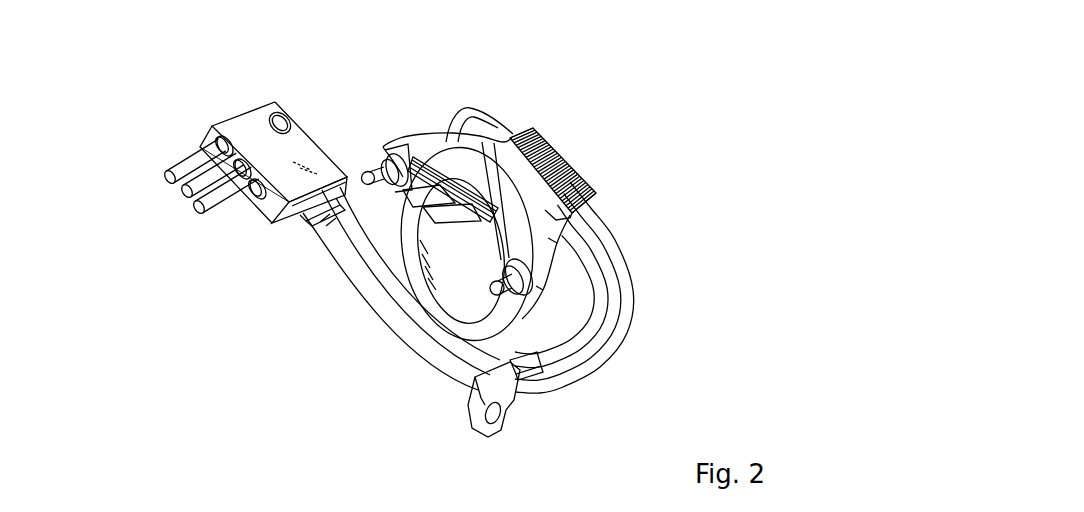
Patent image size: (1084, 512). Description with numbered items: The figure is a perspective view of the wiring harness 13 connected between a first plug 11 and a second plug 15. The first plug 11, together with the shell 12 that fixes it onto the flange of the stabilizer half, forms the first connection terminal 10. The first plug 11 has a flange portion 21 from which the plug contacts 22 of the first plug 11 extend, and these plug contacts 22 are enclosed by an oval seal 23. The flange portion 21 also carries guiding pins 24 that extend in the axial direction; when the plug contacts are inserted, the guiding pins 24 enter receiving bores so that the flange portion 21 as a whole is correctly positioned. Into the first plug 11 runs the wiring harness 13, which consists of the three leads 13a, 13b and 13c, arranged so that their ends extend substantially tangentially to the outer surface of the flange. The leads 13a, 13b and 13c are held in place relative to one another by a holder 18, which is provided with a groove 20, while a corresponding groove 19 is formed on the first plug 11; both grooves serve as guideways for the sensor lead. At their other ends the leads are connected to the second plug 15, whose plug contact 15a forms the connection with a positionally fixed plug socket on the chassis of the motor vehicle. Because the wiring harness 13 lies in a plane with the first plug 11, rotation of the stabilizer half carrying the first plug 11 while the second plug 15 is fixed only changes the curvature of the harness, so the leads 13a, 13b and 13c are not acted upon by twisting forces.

The first connection terminal 10 is at (592, 178).
The first plug 11 is at (531, 135).
The shell 12 is at (463, 292).
The wiring harness 13 is at (625, 223).
The lead 13a is at (597, 272).
The lead 13b is at (615, 297).
The lead 13c is at (627, 325).
The second plug 15 is at (298, 146).
The plug contact 15a is at (192, 208).
The holder 18 is at (506, 405).
The groove 19 is at (548, 152).
The groove 20 is at (478, 418).
The flange portion 21 is at (490, 133).
The plug contacts 22 is at (417, 210).
The seal 23 is at (446, 156).
The guiding pins 24 is at (364, 158).